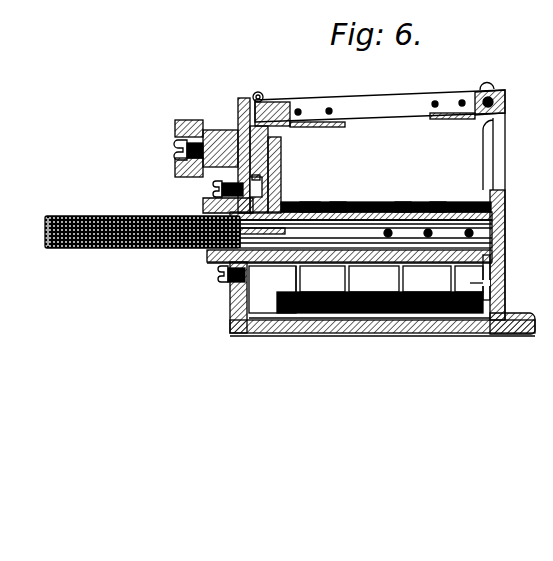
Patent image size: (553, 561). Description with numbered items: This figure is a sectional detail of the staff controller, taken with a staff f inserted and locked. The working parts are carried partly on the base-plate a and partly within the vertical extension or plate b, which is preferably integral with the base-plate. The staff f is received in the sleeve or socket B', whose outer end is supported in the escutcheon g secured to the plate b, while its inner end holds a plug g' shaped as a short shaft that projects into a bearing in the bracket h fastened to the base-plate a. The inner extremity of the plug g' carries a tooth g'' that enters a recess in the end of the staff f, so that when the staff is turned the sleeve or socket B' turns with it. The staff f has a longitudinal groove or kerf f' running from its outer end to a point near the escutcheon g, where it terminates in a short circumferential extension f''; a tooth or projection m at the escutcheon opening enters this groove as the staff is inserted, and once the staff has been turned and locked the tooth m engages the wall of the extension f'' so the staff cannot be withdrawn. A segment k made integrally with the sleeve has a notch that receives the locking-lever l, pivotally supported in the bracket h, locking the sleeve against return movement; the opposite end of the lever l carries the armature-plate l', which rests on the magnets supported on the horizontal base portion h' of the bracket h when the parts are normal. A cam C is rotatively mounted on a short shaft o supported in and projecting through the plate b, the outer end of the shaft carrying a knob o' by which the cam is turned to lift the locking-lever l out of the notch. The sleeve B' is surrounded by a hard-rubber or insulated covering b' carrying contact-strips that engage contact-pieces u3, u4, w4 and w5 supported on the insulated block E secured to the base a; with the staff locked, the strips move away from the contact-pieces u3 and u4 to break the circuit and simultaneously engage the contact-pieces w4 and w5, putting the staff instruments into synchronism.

The locking-lever l is at (379, 99).
The vertical extension or plate b is at (229, 150).
The short shaft o is at (220, 138).
The knob o' is at (175, 148).
The cam C is at (262, 146).
The segment k is at (292, 163).
The tooth or projection m is at (210, 207).
The sleeve or socket B' is at (361, 196).
The hard-rubber or insulated covering b' is at (310, 194).
The longitudinal groove or kerf f' is at (335, 193).
The tooth g'' is at (401, 193).
The plug g' is at (438, 193).
The staff f is at (142, 253).
The circumferential extension f'' is at (328, 254).
The escutcheon g is at (341, 273).
The base-plate a is at (234, 320).
The contact-piece u3 is at (272, 289).
The armature-plate l' is at (320, 279).
The contact-piece u4 is at (374, 279).
The contact-piece w5 is at (443, 279).
The insulated block E is at (377, 314).
The bracket h is at (505, 216).
The contact-piece w4 is at (490, 283).
The horizontal base portion h' is at (512, 311).